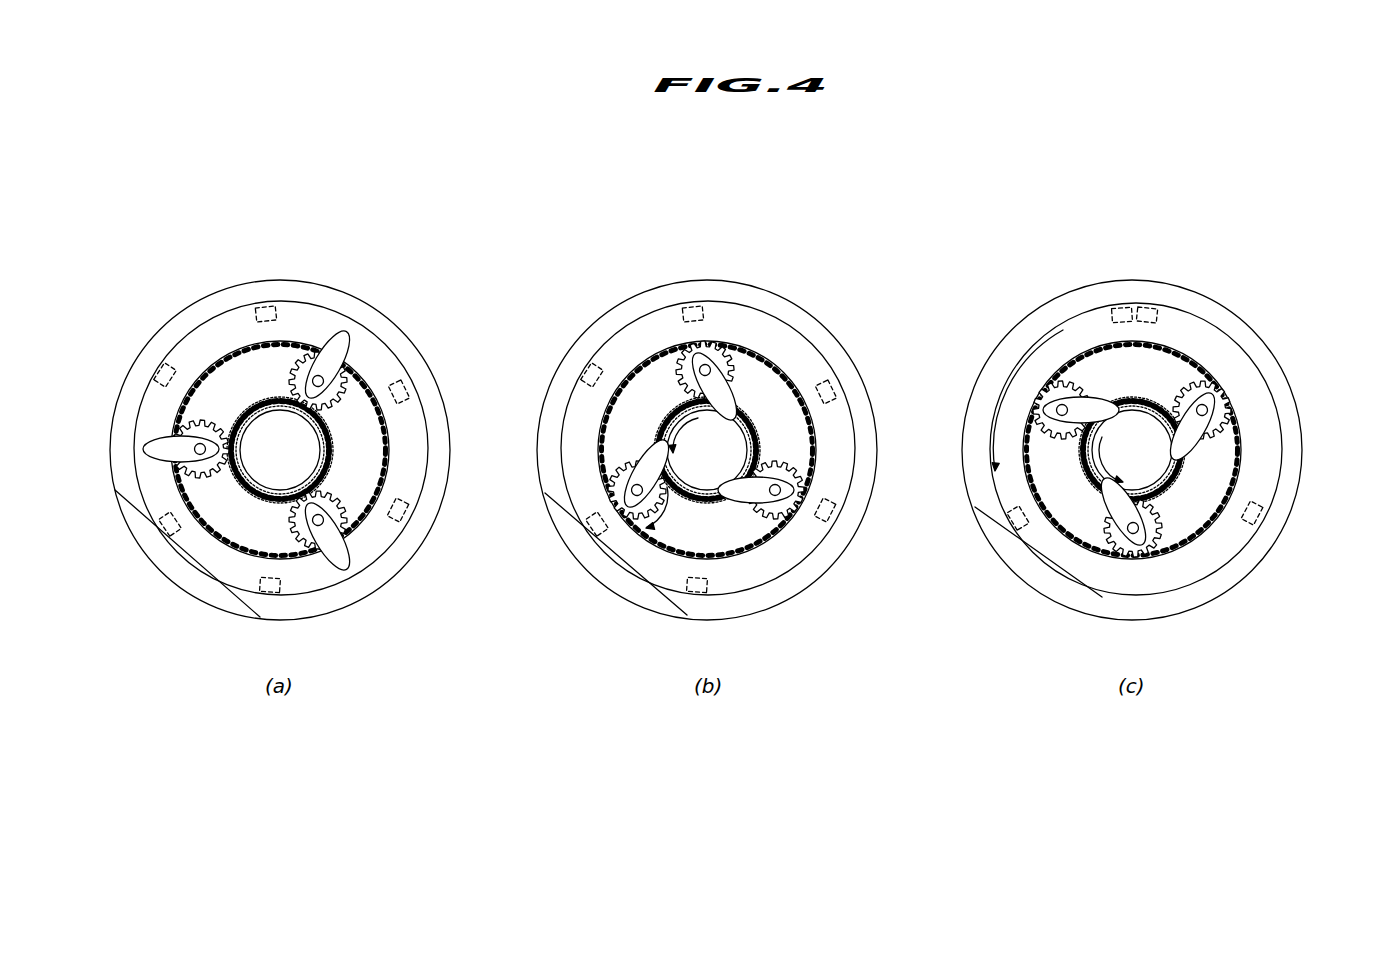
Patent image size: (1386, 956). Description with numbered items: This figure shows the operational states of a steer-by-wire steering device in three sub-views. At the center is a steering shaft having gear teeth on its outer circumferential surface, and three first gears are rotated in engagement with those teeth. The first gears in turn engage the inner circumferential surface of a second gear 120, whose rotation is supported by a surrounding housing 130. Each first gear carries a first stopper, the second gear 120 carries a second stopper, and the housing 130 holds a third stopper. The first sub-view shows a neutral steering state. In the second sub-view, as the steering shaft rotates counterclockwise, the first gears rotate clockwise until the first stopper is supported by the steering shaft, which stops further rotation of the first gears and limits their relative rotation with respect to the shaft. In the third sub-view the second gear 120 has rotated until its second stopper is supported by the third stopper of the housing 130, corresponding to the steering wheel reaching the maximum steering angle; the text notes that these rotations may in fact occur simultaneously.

The second gear 120 is at (223, 330).
The housing 130 is at (168, 318).